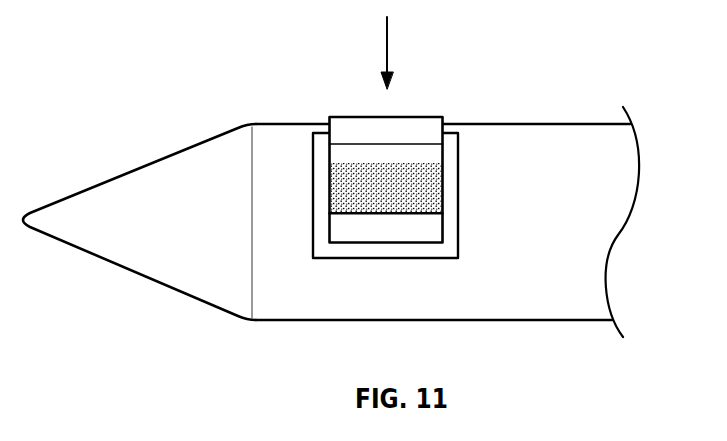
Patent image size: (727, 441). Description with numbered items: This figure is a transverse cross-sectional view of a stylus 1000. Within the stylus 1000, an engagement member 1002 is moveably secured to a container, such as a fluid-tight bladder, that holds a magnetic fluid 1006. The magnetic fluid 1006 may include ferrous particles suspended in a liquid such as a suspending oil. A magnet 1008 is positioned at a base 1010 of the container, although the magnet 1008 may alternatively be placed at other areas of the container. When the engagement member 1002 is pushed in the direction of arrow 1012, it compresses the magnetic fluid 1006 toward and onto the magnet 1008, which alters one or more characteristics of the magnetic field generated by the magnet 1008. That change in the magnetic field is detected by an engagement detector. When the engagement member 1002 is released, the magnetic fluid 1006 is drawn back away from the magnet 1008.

The stylus 1000 is at (166, 111).
The engagement member 1002 is at (405, 116).
The magnetic fluid 1006 is at (427, 182).
The magnet 1008 is at (362, 229).
The base 1010 is at (441, 259).
The arrow 1012 is at (386, 50).